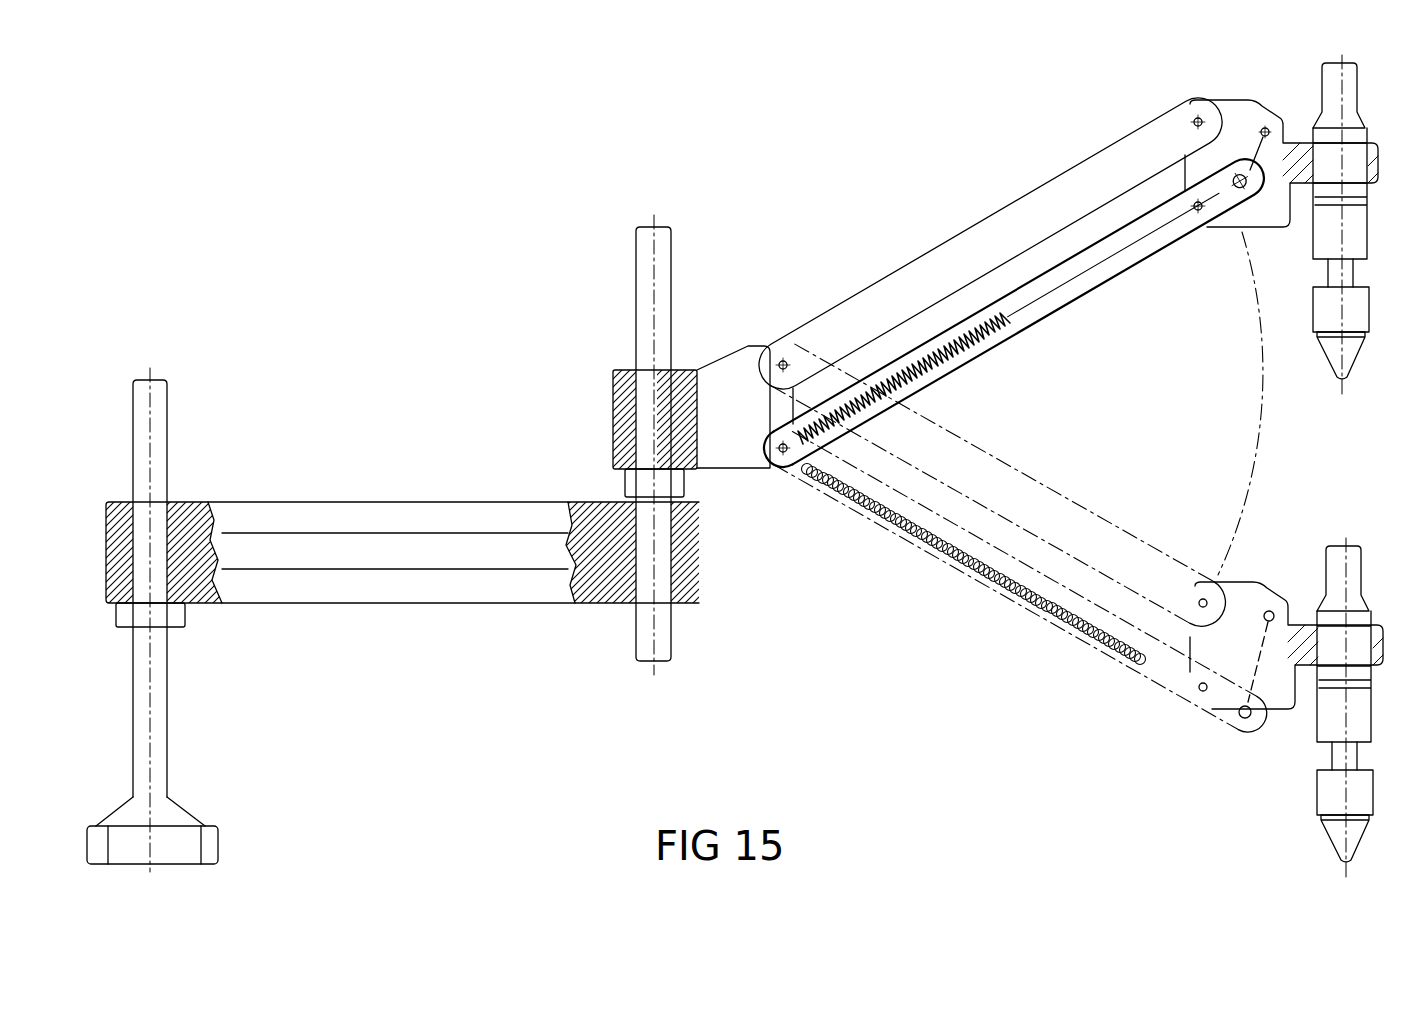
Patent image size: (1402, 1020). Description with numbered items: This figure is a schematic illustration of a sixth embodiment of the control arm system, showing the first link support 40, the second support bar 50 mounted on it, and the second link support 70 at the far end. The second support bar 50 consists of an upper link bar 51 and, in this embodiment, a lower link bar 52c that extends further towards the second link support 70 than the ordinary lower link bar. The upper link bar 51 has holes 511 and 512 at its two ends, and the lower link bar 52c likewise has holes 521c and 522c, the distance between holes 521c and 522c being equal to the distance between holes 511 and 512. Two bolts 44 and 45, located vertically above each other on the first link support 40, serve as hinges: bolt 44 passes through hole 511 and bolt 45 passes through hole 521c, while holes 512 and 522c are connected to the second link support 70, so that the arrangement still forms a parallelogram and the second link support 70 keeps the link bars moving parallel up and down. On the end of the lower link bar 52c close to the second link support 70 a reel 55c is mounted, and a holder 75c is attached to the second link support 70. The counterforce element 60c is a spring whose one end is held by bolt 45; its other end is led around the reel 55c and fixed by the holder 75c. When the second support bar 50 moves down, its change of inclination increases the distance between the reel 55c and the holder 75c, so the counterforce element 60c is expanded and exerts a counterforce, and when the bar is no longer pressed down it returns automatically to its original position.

The first link support 40 is at (744, 326).
The bolt 44 is at (762, 367).
The bolt 45 is at (777, 444).
The second support bar 50 is at (929, 234).
The upper link bar 51 is at (992, 361).
The hole 511 is at (790, 362).
The hole 512 is at (1193, 119).
The lower link bar 52c is at (1004, 445).
The hole 521c is at (776, 456).
The hole 522c is at (1199, 213).
The reel 55c is at (1250, 174).
The counterforce element 60c is at (974, 358).
The second link support 70 is at (1235, 250).
The holder 75c is at (1284, 383).